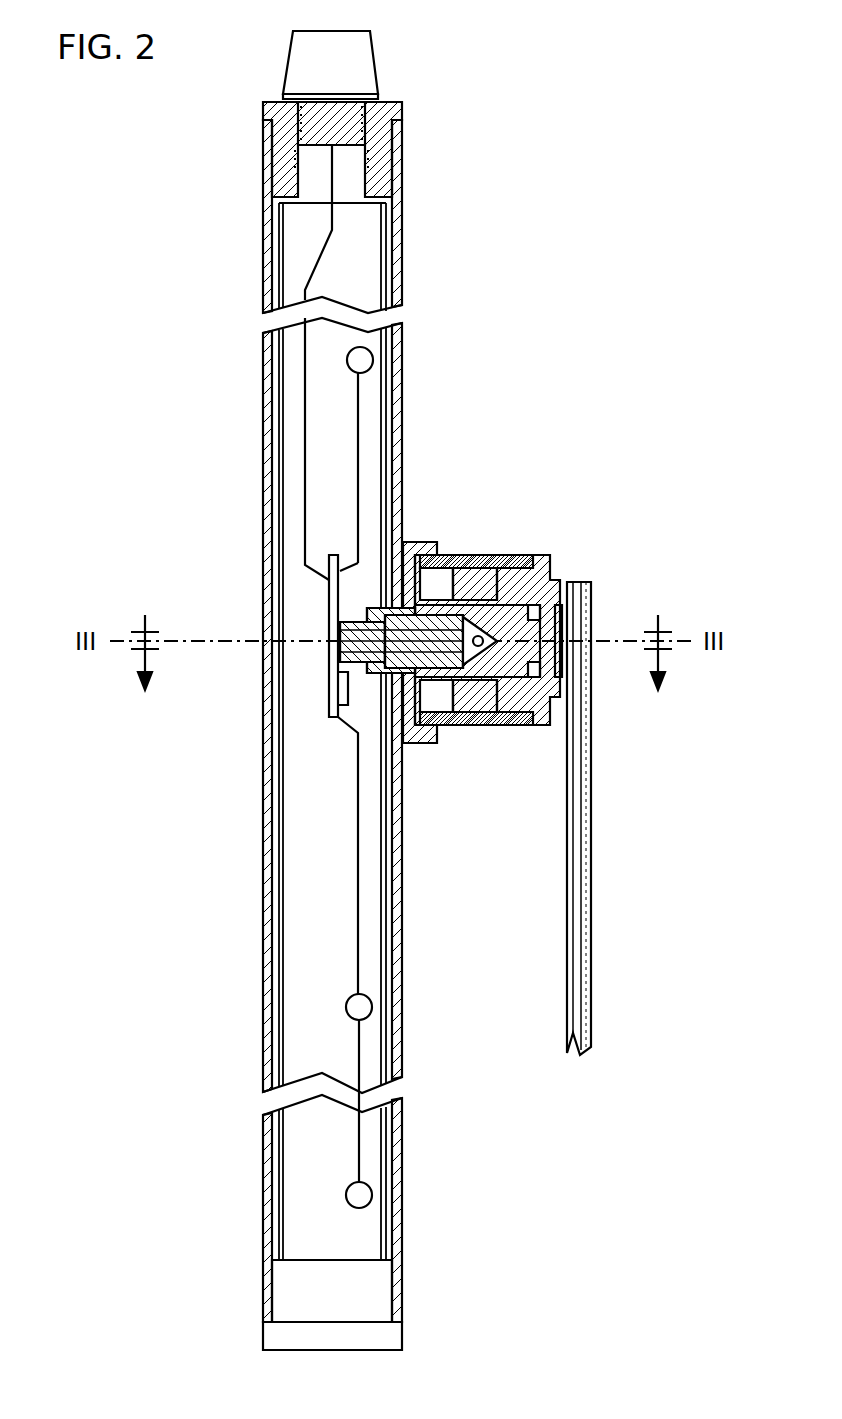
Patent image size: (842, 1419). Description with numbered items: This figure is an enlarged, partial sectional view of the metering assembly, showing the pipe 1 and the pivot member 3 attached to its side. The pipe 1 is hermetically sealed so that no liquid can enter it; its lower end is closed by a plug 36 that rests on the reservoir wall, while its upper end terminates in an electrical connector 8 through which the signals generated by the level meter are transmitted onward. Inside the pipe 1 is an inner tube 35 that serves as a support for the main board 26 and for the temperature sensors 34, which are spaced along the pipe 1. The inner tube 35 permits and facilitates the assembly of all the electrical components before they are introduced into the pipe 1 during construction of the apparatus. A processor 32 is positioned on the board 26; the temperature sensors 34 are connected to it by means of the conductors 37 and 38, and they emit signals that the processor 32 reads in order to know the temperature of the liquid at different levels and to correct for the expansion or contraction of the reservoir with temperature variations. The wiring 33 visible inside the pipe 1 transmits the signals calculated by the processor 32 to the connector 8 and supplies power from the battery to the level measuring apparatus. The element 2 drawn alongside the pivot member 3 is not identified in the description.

The pipe 1 is at (395, 450).
The blade 2 is at (580, 855).
The pivot member 3 is at (562, 540).
The electrical connector 8 is at (355, 63).
The main board 26 is at (329, 590).
The processor 32 is at (343, 685).
The wiring 33 is at (303, 492).
The temperature sensors 34 is at (368, 362).
The inner tube 35 is at (287, 1182).
The plug 36 is at (385, 1337).
The conductor 37 is at (358, 873).
The conductor 38 is at (355, 466).